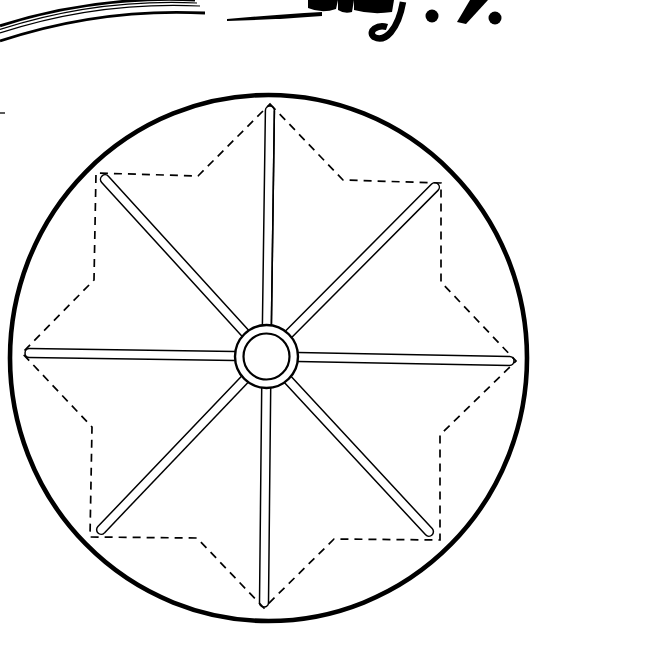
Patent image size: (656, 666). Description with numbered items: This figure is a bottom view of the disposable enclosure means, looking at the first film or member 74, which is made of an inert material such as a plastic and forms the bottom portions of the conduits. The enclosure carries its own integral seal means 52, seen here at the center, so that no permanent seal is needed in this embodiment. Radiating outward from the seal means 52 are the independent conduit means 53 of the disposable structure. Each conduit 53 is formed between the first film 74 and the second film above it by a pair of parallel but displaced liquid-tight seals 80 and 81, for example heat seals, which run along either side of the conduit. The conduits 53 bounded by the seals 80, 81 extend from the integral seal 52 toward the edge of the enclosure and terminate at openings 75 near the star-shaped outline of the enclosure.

The first film or member 74 is at (143, 24).
The openings 75 is at (106, 174).
The integral seal means 52 is at (296, 372).
The conduit means 53 is at (424, 331).
The liquid-tight seal 80 is at (276, 260).
The liquid-tight seal 81 is at (265, 232).